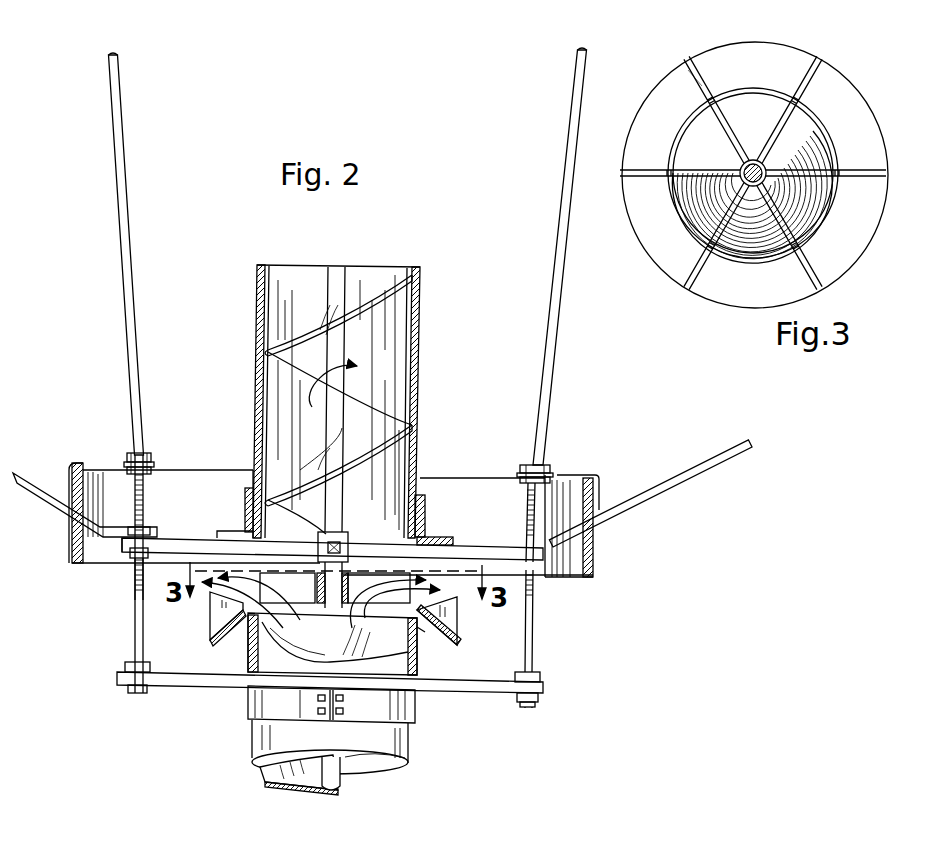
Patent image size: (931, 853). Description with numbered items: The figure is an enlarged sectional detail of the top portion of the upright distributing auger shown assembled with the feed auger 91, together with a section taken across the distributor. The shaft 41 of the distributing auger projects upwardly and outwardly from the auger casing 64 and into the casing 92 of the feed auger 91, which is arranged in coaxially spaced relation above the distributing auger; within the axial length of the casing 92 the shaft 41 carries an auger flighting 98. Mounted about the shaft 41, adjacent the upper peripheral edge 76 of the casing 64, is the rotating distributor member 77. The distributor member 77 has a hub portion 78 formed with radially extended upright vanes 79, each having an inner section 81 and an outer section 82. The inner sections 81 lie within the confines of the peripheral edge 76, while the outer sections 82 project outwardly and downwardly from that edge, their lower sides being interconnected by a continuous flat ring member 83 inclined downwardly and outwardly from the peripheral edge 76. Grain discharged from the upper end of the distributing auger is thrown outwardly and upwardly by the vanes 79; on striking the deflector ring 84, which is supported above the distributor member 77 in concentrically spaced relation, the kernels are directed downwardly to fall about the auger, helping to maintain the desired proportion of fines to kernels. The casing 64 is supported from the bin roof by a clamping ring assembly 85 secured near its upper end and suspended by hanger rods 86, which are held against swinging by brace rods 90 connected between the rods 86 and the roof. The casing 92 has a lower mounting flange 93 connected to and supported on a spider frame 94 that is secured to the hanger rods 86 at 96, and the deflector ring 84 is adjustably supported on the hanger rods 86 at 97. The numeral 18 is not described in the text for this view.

In FIG. 2, the spreader impeller 18 is at (392, 614).
In FIG. 2, the shaft 41 is at (338, 790).
In FIG. 2, the auger casing 64 is at (412, 752).
In FIG. 2, the upper peripheral edge 76 is at (417, 630).
In FIG. 2, the distributor member 77 is at (468, 616).
In FIG. 3, the distributor member 77 is at (840, 58).
In FIG. 3, the hub portion 78 is at (740, 165).
In FIG. 3, the vanes 79 is at (720, 72).
In FIG. 2, the inner sections 81 is at (306, 600).
In FIG. 3, the inner sections 81 is at (720, 130).
In FIG. 2, the outer sections 82 is at (210, 614).
In FIG. 3, the outer sections 82 is at (698, 78).
In FIG. 2, the ring member 83 is at (212, 640).
In FIG. 3, the ring member 83 is at (653, 225).
In FIG. 2, the deflector ring 84 is at (599, 560).
In FIG. 2, the clamping ring assembly 85 is at (243, 703).
In FIG. 2, the hanger rods 86 is at (126, 182).
In FIG. 2, the brace rods 90 is at (22, 472).
In FIG. 2, the feed auger 91 is at (424, 343).
In FIG. 2, the casing 92 is at (421, 380).
In FIG. 2, the lower mounting flange 93 is at (428, 493).
In FIG. 2, the spider frame 94 is at (168, 562).
In FIG. 2, the securing connection 96 is at (150, 523).
In FIG. 2, the adjustable support 97 is at (153, 455).
In FIG. 2, the auger flighting 98 is at (398, 272).